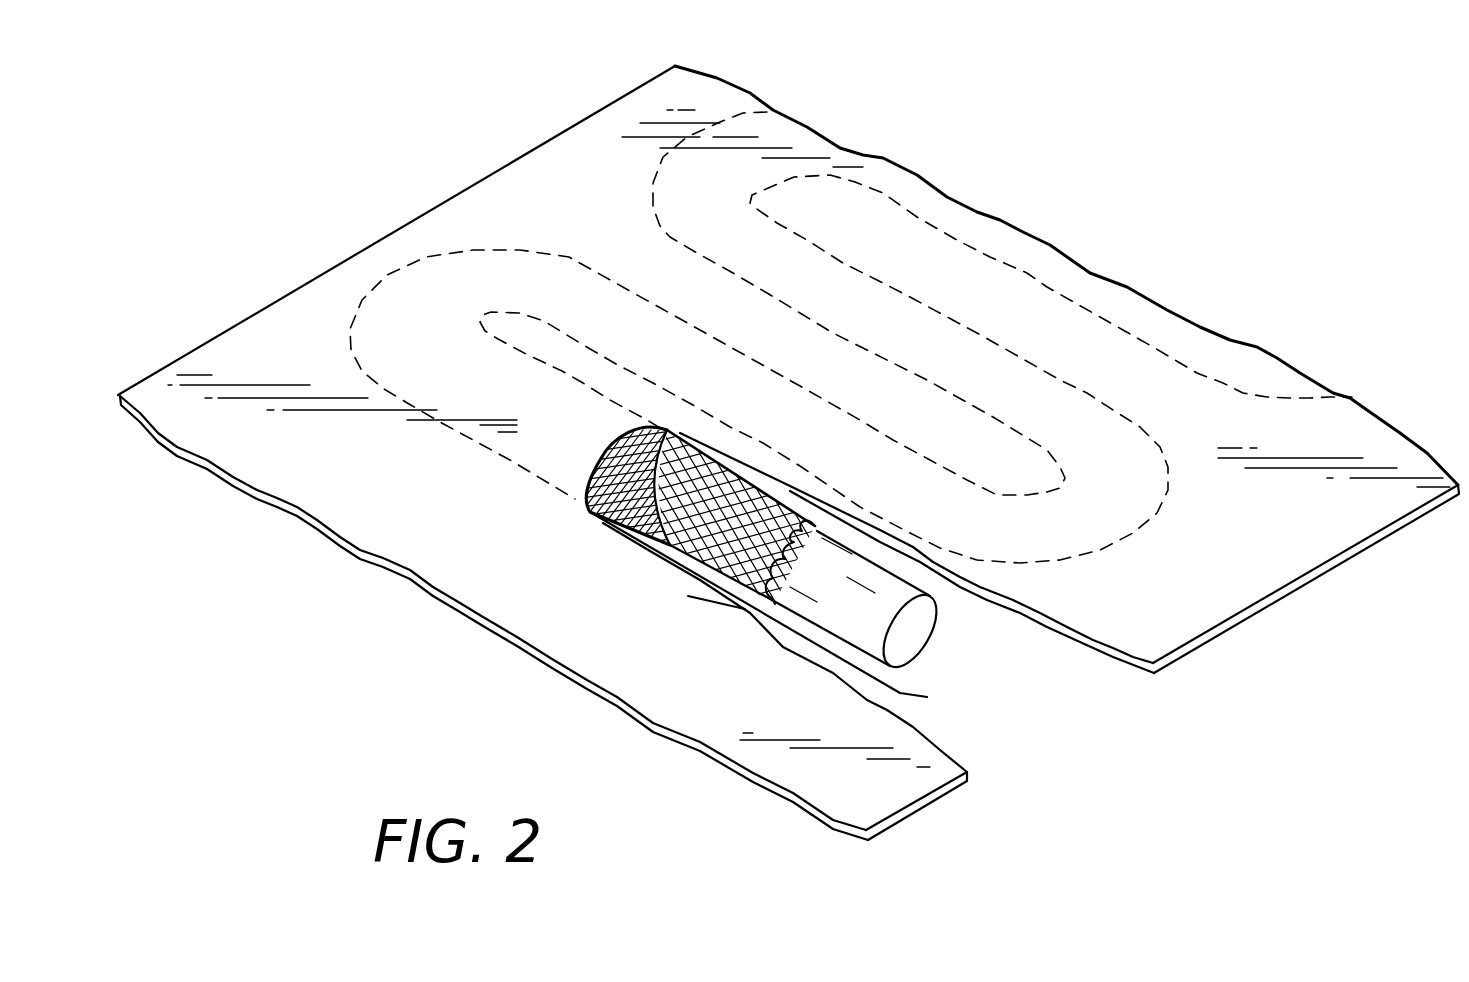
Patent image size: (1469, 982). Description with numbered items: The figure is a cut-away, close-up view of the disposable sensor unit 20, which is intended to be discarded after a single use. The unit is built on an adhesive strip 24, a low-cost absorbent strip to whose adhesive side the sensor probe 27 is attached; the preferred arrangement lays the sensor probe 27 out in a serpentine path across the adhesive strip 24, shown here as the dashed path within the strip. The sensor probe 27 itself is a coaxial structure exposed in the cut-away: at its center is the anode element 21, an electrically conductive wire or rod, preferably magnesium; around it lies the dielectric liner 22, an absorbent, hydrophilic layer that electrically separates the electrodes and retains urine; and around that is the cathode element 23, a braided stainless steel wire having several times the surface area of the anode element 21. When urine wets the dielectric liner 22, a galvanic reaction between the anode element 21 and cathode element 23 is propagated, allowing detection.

The disposable sensor unit 20 is at (328, 143).
The anode element 21 is at (935, 633).
The dielectric liner 22 is at (752, 512).
The cathode element 23 is at (667, 432).
The adhesive strip 24 is at (1102, 655).
The sensor probe 27 is at (750, 615).